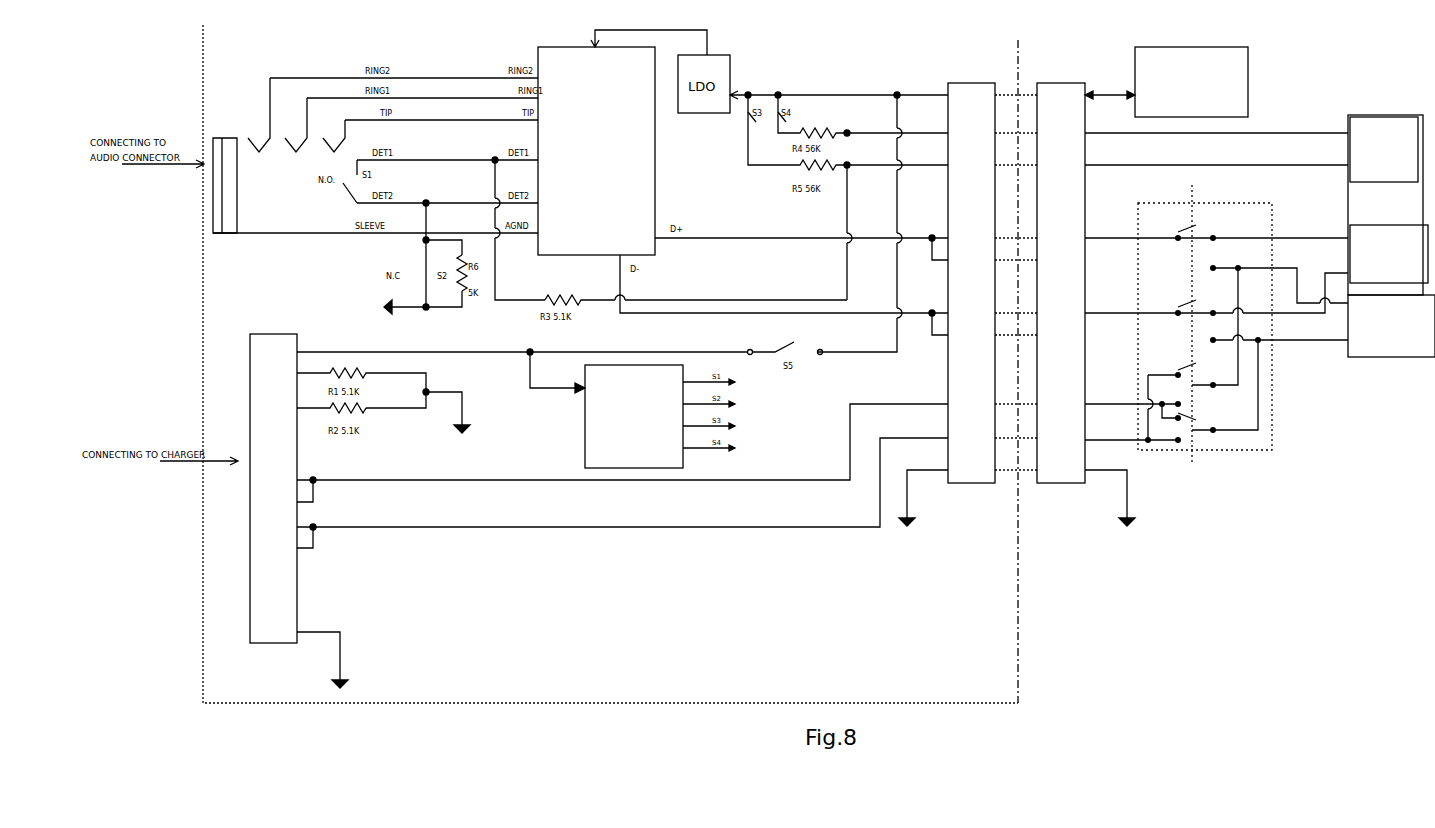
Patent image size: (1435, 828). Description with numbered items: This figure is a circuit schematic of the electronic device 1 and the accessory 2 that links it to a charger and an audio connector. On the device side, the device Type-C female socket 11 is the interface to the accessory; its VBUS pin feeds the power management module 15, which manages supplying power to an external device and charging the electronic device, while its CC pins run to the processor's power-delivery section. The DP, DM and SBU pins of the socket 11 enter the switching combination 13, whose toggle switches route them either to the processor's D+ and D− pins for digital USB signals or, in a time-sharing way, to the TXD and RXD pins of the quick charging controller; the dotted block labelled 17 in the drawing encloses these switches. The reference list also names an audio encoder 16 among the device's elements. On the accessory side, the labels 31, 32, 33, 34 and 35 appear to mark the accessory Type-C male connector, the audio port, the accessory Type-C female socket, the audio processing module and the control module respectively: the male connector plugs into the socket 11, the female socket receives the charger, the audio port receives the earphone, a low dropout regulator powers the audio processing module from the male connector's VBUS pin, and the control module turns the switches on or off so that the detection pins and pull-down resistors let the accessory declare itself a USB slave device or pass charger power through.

The electronic device 1 is at (1268, 597).
The accessory 2 is at (740, 597).
The device Type-C female socket 11 is at (1052, 83).
The switching combination 13 is at (1402, 357).
The power management module 15 is at (1200, 47).
The audio encoder 16 is at (1422, 115).
The switch module 17 is at (1245, 450).
The first USB connector 31 is at (978, 83).
The audio connector 32 is at (268, 233).
The second USB connector 33 is at (250, 548).
The audio processing module 34 is at (565, 47).
The control module 35 is at (585, 410).